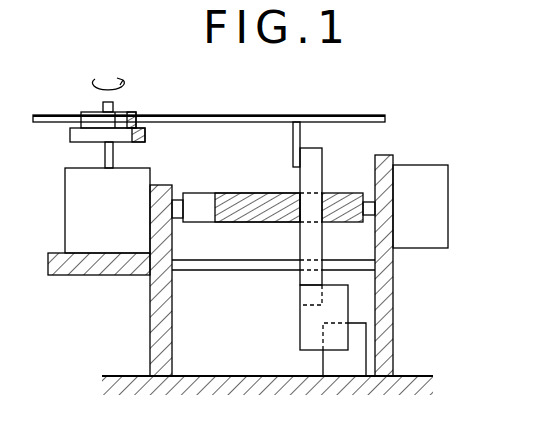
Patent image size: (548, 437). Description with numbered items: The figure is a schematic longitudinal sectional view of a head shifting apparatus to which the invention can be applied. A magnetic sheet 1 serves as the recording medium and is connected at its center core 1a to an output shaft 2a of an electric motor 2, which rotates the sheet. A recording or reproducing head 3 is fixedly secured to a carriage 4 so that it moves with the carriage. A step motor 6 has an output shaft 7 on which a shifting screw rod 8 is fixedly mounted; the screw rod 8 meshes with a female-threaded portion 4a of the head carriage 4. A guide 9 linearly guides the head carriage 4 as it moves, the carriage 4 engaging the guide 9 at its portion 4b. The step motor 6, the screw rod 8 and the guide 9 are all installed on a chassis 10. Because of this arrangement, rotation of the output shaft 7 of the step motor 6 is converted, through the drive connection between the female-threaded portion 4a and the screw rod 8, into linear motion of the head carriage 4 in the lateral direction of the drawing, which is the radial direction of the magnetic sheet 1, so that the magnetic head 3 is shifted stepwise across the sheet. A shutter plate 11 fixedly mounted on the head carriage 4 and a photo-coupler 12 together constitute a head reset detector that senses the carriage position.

The magnetic sheet 1 is at (312, 115).
The center core 1a is at (118, 112).
The electric motor 2 is at (72, 217).
The output shaft 2a is at (106, 157).
The recording or reproducing head 3 is at (301, 130).
The carriage 4 is at (323, 166).
The female-threaded portion 4a is at (310, 189).
The portion 4b is at (297, 286).
The step motor 6 is at (432, 168).
The output shaft 7 is at (368, 220).
The shifting screw rod 8 is at (267, 227).
The guide 9 is at (238, 272).
The chassis 10 is at (395, 322).
The shutter plate 11 is at (298, 337).
The photo-coupler 12 is at (337, 374).